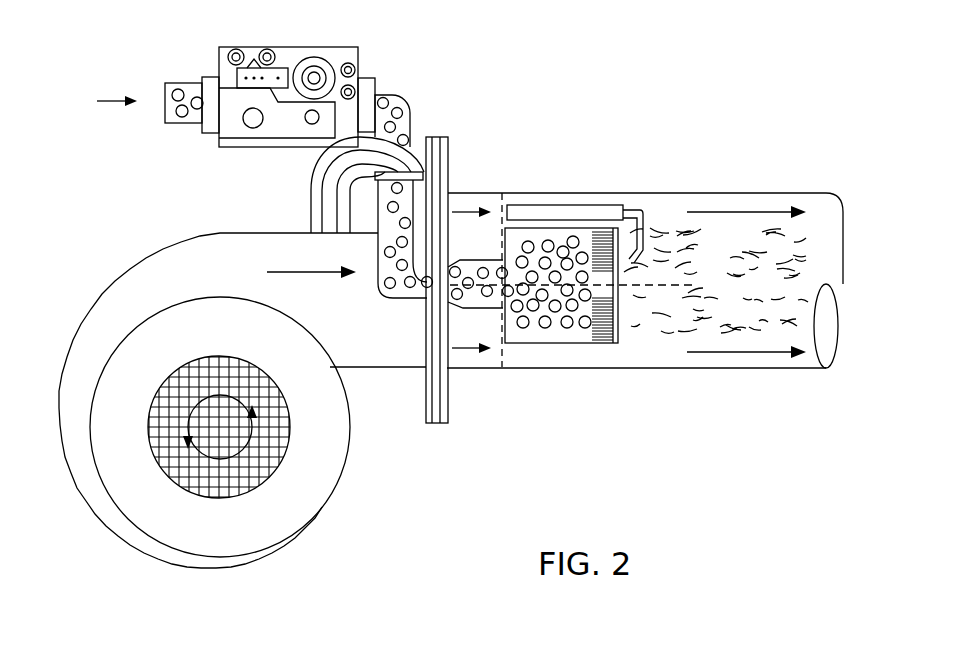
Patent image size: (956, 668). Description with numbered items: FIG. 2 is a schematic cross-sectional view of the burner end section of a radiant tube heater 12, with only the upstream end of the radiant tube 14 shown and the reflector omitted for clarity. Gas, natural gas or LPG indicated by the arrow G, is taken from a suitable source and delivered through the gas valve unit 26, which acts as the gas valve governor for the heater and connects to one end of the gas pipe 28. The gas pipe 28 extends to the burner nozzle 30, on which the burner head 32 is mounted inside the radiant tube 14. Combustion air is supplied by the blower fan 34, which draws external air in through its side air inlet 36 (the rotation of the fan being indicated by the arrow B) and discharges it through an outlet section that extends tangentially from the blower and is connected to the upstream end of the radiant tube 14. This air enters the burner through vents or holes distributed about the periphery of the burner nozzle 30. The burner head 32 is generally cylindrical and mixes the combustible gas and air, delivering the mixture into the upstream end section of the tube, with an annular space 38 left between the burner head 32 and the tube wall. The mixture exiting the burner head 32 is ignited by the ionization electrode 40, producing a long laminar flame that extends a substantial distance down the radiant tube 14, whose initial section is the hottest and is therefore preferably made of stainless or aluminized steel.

The seed treatment apparatus 12 is at (538, 163).
The radiant tube 14 is at (730, 193).
The gas valve unit 26 is at (253, 47).
The gas pipe 28 is at (396, 95).
The burner nozzle 30 is at (473, 301).
The burner head 32 is at (553, 344).
The blower fan 34 is at (153, 282).
The side air inlet 36 is at (262, 480).
The annular space 38 is at (597, 346).
The ionization electrode 40 is at (645, 228).
The blower rotation direction B is at (223, 458).
The gas supply arrow G is at (102, 102).